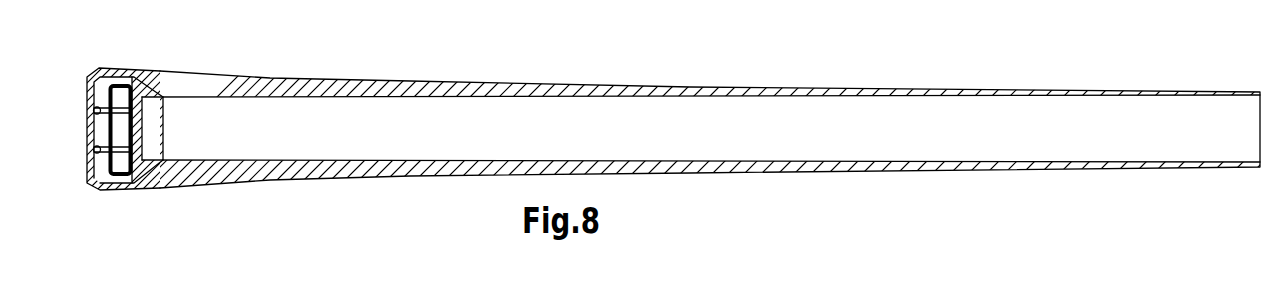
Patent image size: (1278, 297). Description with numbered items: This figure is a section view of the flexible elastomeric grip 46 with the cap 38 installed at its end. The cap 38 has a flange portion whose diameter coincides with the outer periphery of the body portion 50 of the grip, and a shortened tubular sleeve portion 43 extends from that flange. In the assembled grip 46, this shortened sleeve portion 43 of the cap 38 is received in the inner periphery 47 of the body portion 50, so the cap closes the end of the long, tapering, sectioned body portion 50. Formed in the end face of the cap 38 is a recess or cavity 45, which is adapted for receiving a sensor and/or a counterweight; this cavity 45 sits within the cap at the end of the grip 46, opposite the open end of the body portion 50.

The cap 38 is at (80, 89).
The shortened tubular sleeve portion 43 is at (142, 78).
The recess or cavity 45 is at (99, 175).
The flexible elastomeric grip 46 is at (398, 65).
The inner periphery 47 is at (140, 163).
The body portion 50 is at (613, 85).